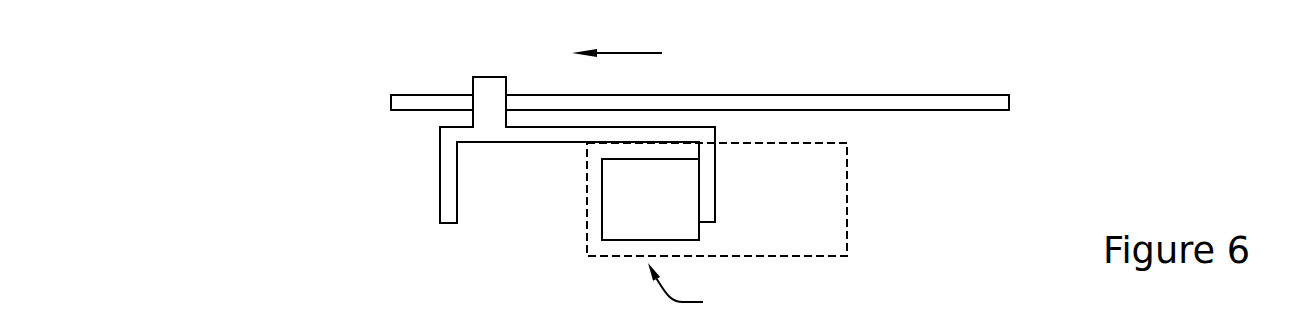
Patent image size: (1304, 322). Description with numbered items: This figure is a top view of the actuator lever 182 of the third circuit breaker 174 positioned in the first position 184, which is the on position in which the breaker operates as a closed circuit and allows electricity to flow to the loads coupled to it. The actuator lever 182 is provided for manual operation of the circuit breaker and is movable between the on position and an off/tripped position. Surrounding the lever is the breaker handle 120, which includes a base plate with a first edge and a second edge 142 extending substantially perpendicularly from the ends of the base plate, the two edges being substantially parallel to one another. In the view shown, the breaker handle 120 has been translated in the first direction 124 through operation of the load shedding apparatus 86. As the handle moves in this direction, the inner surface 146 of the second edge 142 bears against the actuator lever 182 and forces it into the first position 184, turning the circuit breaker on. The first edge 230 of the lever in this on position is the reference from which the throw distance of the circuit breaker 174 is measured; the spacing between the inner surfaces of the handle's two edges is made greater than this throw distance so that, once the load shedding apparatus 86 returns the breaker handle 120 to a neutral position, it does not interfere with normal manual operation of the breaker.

The load shedding apparatus 86 is at (806, 80).
The first direction 124 is at (643, 53).
The second edge 142 is at (716, 158).
The breaker handle 120 is at (440, 170).
The inner surface 146 is at (698, 152).
The first edge 230 is at (602, 200).
The actuator lever 182 is at (700, 234).
The third circuit breaker 174 is at (848, 183).
The first position 184 is at (696, 288).